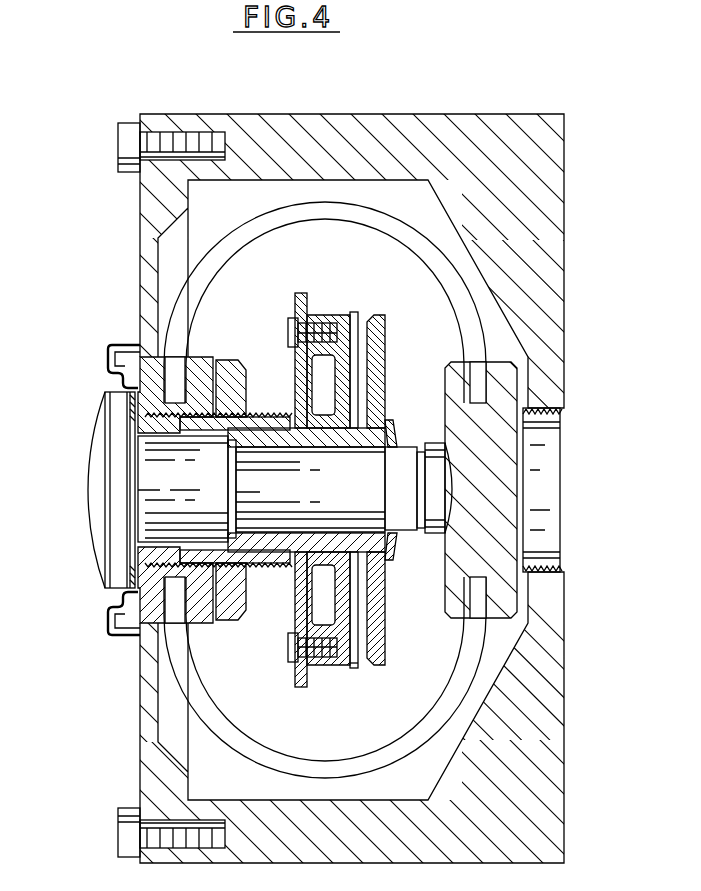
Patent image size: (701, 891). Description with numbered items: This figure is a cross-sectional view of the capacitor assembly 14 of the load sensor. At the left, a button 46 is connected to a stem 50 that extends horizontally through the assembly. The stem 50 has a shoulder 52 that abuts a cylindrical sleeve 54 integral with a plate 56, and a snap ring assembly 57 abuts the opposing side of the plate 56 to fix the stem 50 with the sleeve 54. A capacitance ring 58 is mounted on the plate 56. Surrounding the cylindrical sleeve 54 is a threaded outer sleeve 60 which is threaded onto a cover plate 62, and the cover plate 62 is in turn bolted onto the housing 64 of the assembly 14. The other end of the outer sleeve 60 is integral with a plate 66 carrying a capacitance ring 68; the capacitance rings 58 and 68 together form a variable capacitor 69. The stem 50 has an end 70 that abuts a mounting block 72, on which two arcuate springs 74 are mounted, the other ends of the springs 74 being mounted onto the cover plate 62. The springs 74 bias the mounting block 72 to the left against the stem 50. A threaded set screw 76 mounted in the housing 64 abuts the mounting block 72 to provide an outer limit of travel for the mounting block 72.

The capacitor assembly 14 is at (430, 115).
The button 46 is at (96, 474).
The stem 50 is at (378, 482).
The shoulder 52 is at (256, 422).
The cylindrical sleeve 54 is at (238, 462).
The plate 56 is at (379, 334).
The snap ring assembly 57 is at (391, 425).
The capacitance ring 58 is at (362, 318).
The threaded outer sleeve 60 is at (226, 410).
The cover plate 62 is at (150, 362).
The housing 64 is at (287, 113).
The plate 66 is at (330, 322).
The capacitance ring 68 is at (356, 314).
The variable capacitor 69 is at (362, 668).
The end 70 is at (446, 465).
The mounting block 72 is at (455, 574).
The arcuate springs 74 is at (372, 223).
The threaded set screw 76 is at (560, 416).